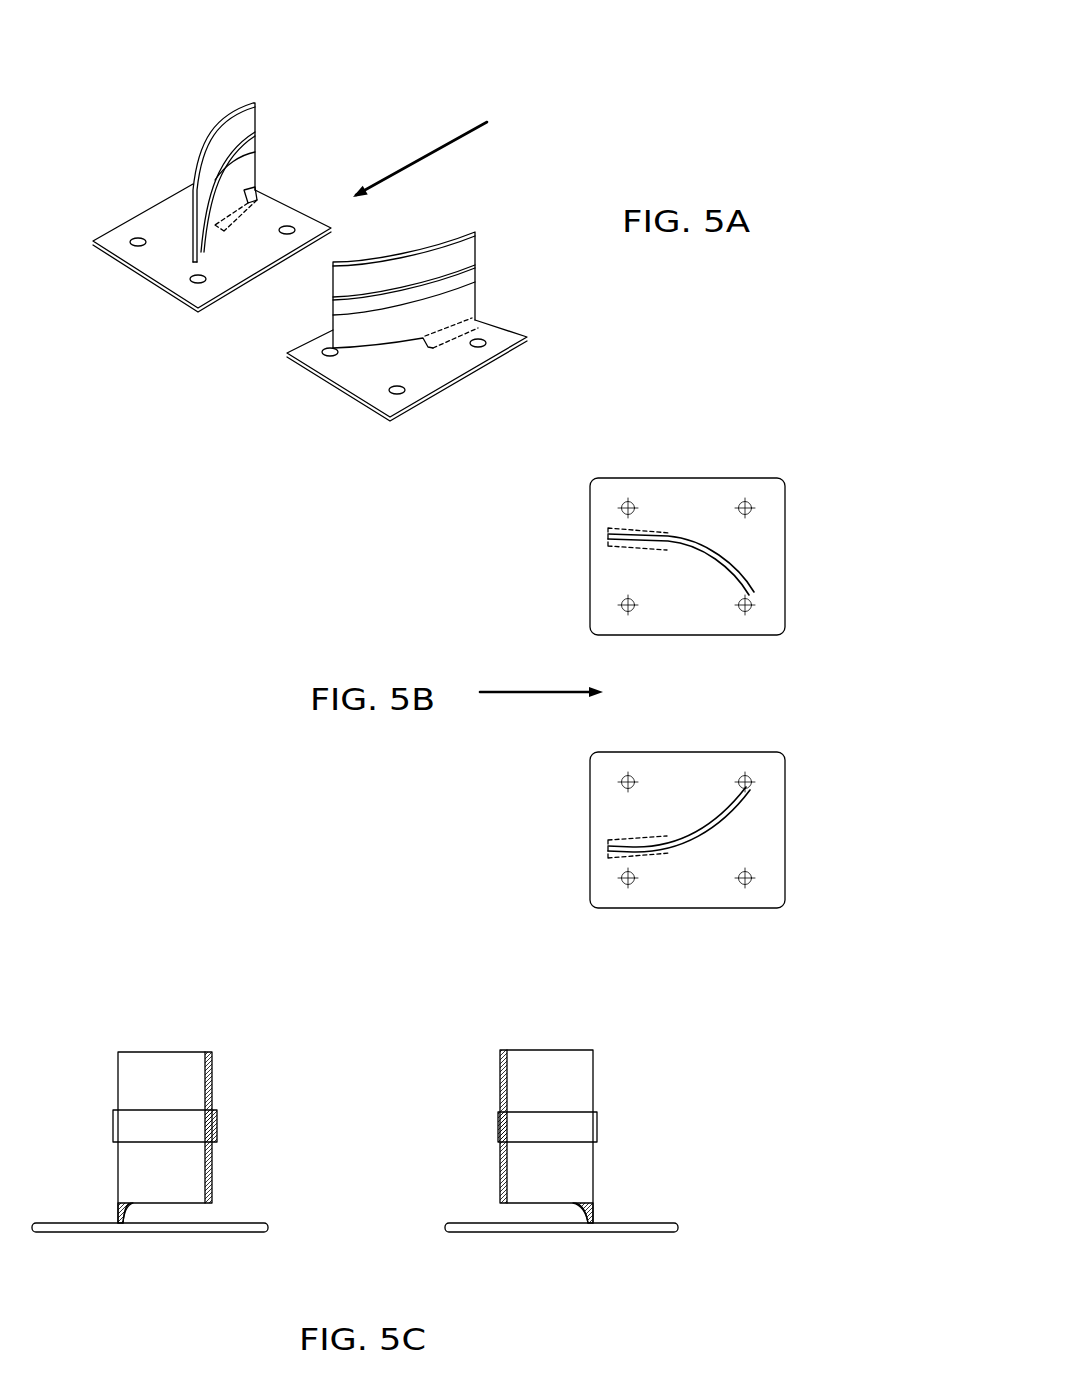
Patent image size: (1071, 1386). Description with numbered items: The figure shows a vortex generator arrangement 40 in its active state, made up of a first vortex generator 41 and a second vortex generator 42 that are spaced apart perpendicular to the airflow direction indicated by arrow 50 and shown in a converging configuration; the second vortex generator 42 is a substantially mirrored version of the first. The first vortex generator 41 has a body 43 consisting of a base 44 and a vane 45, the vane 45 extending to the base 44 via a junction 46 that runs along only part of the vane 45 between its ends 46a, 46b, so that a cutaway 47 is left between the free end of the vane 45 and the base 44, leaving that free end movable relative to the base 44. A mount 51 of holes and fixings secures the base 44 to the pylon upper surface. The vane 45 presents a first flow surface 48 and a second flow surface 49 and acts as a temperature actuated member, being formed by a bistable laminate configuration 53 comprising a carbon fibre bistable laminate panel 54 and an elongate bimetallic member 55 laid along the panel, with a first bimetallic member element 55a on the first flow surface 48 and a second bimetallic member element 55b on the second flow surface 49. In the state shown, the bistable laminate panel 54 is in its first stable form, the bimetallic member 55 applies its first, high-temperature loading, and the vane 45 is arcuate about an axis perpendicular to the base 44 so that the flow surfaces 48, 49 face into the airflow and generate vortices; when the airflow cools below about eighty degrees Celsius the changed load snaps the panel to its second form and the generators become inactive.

In FIG. 5A, the vortex generator arrangement 40 is at (545, 95).
In FIG. 5B, the vortex generator arrangement 40 is at (883, 624).
In FIG. 5C, the vortex generator arrangement 40 is at (284, 967).
In FIG. 5A, the first vortex generator 41 is at (205, 70).
In FIG. 5B, the first vortex generator 41 is at (820, 738).
In FIG. 5C, the first vortex generator 41 is at (160, 1016).
In FIG. 5A, the second vortex generator 42 is at (345, 428).
In FIG. 5B, the second vortex generator 42 is at (838, 512).
In FIG. 5C, the second vortex generator 42 is at (562, 1030).
In FIG. 5A, the body 43 is at (118, 180).
In FIG. 5A, the base 44 is at (193, 296).
In FIG. 5B, the base 44 is at (698, 490).
In FIG. 5C, the base 44 is at (158, 1228).
In FIG. 5A, the vane 45 is at (208, 157).
In FIG. 5C, the vane 45 is at (580, 1097).
In FIG. 5A, the junction 46 is at (262, 191).
In FIG. 5A, the junction end 46a is at (257, 103).
In FIG. 5B, the junction end 46a is at (608, 537).
In FIG. 5A, the junction end 46b is at (192, 258).
In FIG. 5B, the junction end 46b is at (753, 592).
In FIG. 5A, the cutaway 47 is at (216, 222).
In FIG. 5A, the first flow surface 48 is at (256, 132).
In FIG. 5A, the second flow surface 49 is at (195, 180).
In FIG. 5A, the arrow 50 is at (458, 143).
In FIG. 5B, the arrow 50 is at (517, 692).
In FIG. 5A, the mount 51 is at (323, 229).
In FIG. 5A, the bistable laminate configuration 53 is at (246, 95).
In FIG. 5A, the bistable laminate panel 54 is at (230, 137).
In FIG. 5C, the bistable laminate panel 54 is at (133, 1166).
In FIG. 5A, the bimetallic member 55 is at (256, 155).
In FIG. 5A, the first bimetallic member element 55a is at (217, 176).
In FIG. 5B, the first bimetallic member element 55a is at (712, 568).
In FIG. 5A, the second bimetallic member element 55b is at (202, 213).
In FIG. 5B, the second bimetallic member element 55b is at (690, 553).